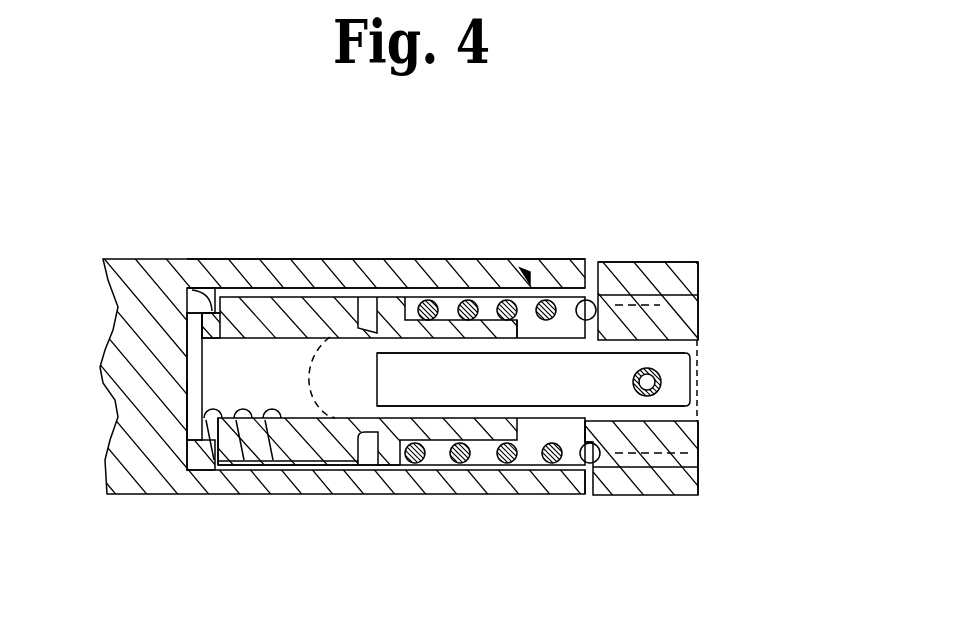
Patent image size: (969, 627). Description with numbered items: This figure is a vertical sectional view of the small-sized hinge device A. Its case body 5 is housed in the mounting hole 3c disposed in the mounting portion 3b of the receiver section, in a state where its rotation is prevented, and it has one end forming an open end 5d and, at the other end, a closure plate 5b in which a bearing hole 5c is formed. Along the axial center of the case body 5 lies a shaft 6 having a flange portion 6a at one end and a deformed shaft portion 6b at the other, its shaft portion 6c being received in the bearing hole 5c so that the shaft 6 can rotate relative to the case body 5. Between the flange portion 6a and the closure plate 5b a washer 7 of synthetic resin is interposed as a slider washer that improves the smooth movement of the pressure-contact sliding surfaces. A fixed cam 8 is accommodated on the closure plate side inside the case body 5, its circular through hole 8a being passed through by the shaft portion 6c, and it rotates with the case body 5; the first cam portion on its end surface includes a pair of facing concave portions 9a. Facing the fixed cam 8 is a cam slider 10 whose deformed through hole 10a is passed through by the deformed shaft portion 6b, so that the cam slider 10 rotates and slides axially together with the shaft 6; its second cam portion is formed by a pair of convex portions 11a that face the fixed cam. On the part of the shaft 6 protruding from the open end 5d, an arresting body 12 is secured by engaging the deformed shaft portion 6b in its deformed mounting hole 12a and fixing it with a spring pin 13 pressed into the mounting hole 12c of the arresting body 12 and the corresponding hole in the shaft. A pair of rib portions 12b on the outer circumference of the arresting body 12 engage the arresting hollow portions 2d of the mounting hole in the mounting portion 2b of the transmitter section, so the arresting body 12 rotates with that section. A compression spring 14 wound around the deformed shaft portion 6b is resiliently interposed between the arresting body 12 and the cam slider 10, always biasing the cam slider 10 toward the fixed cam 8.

The mounting portion 2b is at (672, 265).
The arresting hollow portion 2d is at (645, 298).
The mounting portion 3b is at (333, 262).
The mounting hole 3c is at (305, 282).
The case body 5 is at (420, 262).
The closure plate 5b is at (193, 286).
The bearing hole 5c is at (188, 468).
The open end 5d is at (587, 428).
The shaft 6 is at (256, 262).
The flange portion 6a is at (187, 412).
The deformed shaft portion 6b is at (603, 387).
The shaft portion 6c is at (262, 470).
The washer 7 is at (187, 322).
The fixed cam 8 is at (303, 452).
The through hole 8a is at (218, 470).
The concave portion 9a is at (335, 418).
The cam slider 10 is at (437, 433).
The deformed through hole 10a is at (455, 282).
The convex portion 11a is at (352, 372).
The arresting body 12 is at (680, 317).
The deformed mounting hole 12a is at (655, 412).
The rib portion 12b is at (700, 270).
The mounting hole 12c is at (658, 372).
The spring pin 13 is at (662, 376).
The compression spring 14 is at (503, 462).
The small-sized hinge device A is at (527, 276).